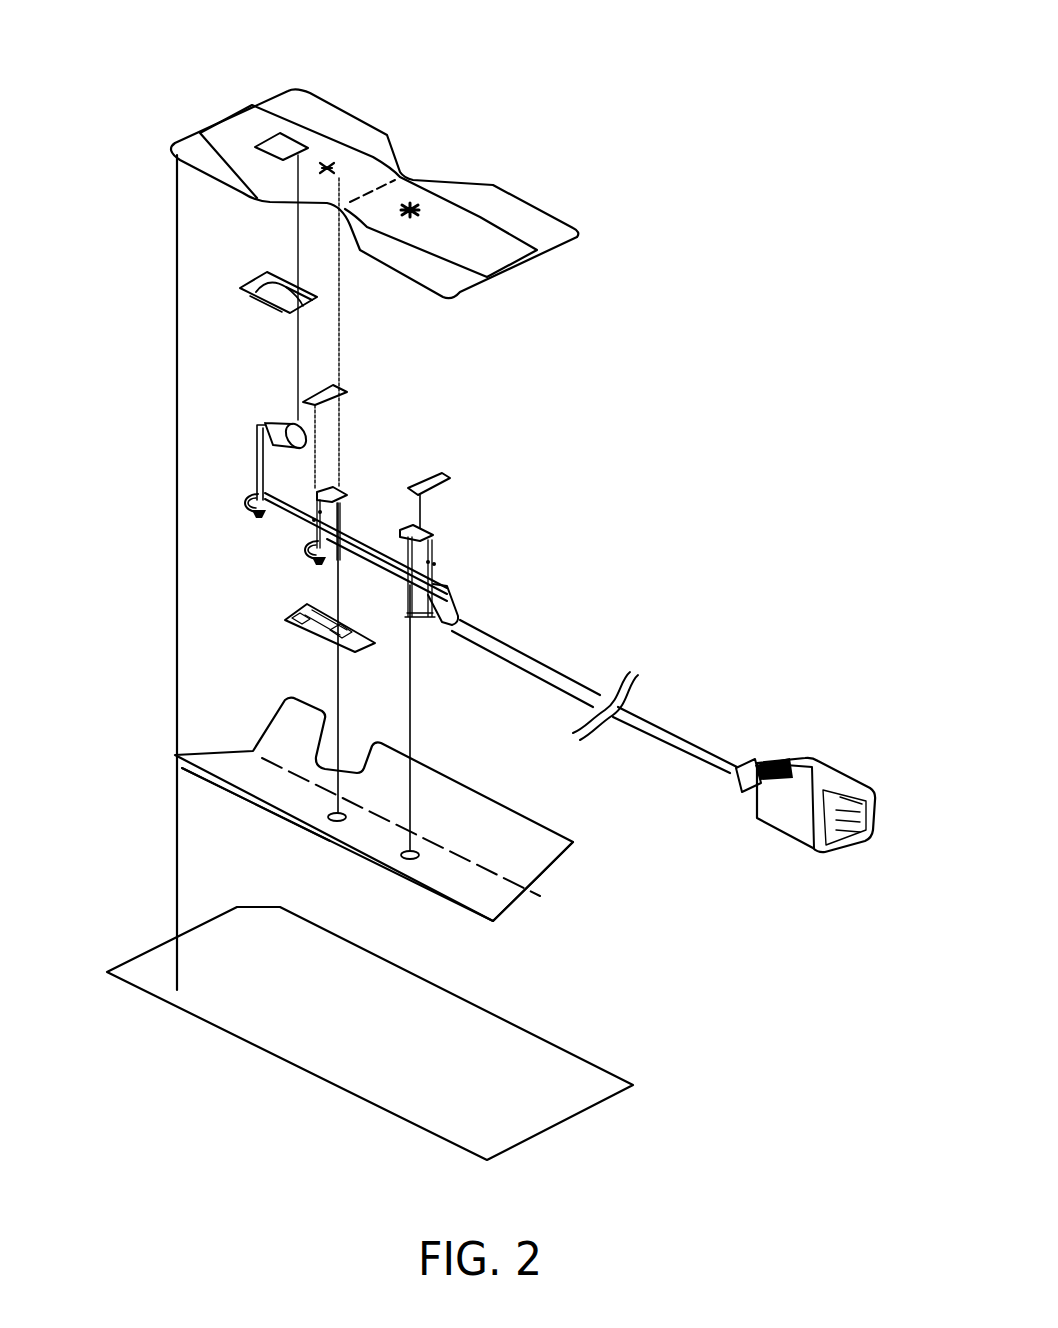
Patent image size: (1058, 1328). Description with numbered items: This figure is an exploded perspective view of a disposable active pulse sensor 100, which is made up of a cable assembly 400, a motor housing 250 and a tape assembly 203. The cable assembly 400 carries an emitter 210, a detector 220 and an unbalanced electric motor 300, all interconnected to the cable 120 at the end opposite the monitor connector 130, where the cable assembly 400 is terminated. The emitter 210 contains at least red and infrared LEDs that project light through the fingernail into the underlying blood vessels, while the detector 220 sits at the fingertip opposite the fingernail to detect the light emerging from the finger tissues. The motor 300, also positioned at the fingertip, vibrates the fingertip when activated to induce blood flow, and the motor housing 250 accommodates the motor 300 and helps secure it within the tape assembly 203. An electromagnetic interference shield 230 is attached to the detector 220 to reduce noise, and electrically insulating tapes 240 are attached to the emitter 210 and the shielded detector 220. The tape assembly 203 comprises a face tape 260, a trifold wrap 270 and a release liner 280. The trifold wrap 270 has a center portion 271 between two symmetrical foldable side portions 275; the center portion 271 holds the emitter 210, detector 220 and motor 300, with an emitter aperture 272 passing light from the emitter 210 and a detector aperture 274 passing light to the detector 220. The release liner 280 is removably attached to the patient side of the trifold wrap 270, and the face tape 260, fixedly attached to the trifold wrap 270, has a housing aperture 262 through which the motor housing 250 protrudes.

The disposable active pulse sensor 100 is at (420, 62).
The cable 120 is at (653, 715).
The monitor connector 130 is at (833, 767).
The tape assembly 203 is at (140, 182).
The emitter 210 is at (422, 533).
The detector 220 is at (343, 493).
The electromagnetic interference (EMI) shield 230 is at (317, 607).
The electrically insulating tapes 240 is at (347, 390).
The motor housing 250 is at (275, 277).
The face tape 260 is at (498, 185).
The housing aperture 262 is at (267, 140).
The trifold wrap 270 is at (467, 783).
The center portion 271 is at (513, 900).
The emitter aperture 272 is at (408, 850).
The detector aperture 274 is at (335, 812).
The foldable side portions 275 is at (428, 887).
The release liner 280 is at (527, 1033).
The unbalanced electric motor 300 is at (287, 417).
The cable assembly 400 is at (618, 566).